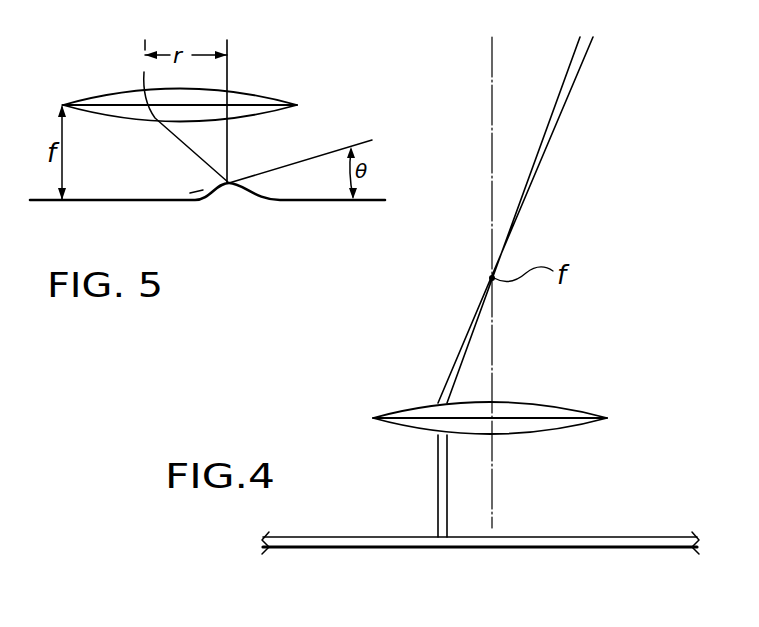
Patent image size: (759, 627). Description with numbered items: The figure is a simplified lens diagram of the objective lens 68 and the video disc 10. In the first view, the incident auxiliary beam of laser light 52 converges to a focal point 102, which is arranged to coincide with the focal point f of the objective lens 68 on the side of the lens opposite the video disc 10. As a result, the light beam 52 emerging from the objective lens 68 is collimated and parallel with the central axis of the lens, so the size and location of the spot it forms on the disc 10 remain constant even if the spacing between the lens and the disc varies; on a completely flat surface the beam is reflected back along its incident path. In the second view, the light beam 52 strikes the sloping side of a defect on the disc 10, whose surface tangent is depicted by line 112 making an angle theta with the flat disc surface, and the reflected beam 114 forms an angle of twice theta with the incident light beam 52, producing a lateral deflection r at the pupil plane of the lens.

In FIG. 5, the video disc 10 is at (137, 200).
In FIG. 4, the video disc 10 is at (570, 537).
In FIG. 5, the auxiliary beam of laser light 52 is at (230, 135).
In FIG. 4, the auxiliary beam of laser light 52 is at (583, 68).
In FIG. 5, the objective lens 68 is at (265, 92).
In FIG. 4, the objective lens 68 is at (565, 403).
In FIG. 4, the focal point 102 is at (491, 279).
In FIG. 5, the tangent line of defect surface 112 is at (327, 149).
In FIG. 5, the reflected beam 114 is at (150, 119).